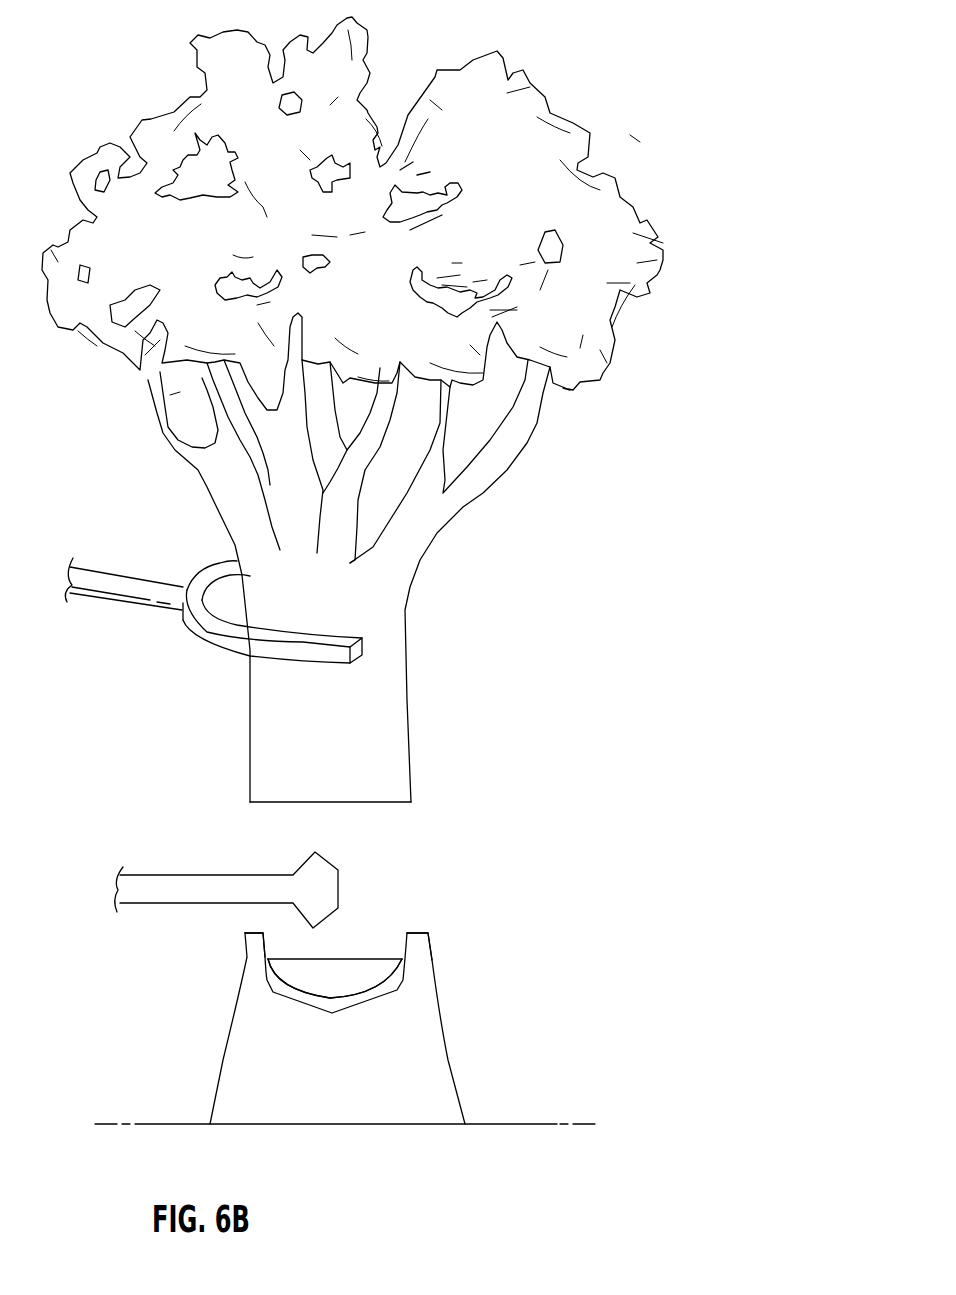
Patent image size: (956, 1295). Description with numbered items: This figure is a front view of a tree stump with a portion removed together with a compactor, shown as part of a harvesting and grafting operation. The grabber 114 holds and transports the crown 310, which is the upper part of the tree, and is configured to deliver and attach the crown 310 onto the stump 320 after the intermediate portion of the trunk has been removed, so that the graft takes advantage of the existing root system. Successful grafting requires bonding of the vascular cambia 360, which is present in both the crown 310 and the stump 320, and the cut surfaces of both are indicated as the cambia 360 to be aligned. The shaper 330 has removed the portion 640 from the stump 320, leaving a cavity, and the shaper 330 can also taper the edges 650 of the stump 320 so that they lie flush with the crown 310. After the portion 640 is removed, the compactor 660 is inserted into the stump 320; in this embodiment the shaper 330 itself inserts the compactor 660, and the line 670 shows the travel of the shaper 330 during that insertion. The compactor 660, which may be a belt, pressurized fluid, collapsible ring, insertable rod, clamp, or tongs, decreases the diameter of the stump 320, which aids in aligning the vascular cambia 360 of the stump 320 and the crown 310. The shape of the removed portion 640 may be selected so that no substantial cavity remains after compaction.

The crown 310 is at (582, 98).
The grabber 114 is at (147, 578).
The shaper 330 is at (183, 873).
The stump 320 is at (466, 1060).
The vascular cambia 360 is at (267, 805).
The portion of stump 640 is at (375, 941).
The edges of stump 650 is at (415, 955).
The compactor 660 is at (292, 951).
The line 670 is at (347, 958).